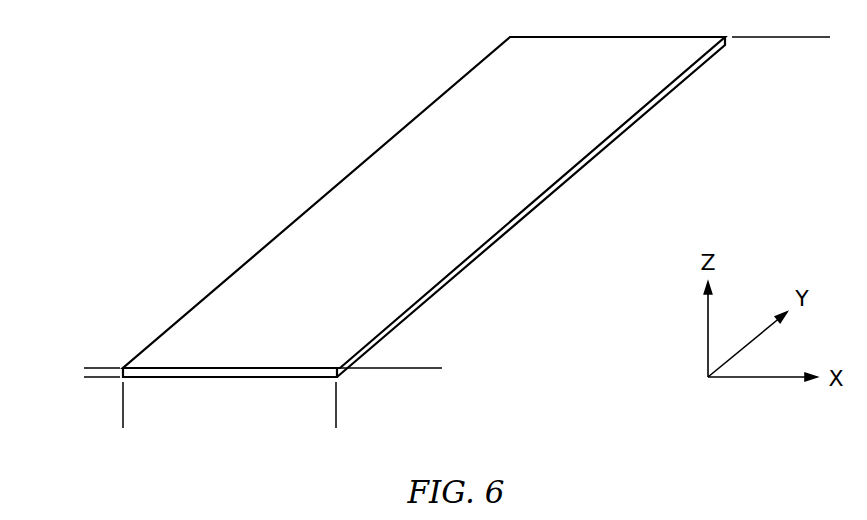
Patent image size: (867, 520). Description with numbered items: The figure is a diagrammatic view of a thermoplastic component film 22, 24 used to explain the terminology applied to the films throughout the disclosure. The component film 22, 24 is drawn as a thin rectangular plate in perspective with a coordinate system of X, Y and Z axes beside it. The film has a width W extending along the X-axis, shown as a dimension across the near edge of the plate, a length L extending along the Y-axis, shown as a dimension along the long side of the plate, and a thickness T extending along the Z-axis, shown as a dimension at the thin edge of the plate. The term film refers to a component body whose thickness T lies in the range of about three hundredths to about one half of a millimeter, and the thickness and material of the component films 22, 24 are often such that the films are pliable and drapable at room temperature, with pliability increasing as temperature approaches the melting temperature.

The component film 22 is at (424, 207).
The component film 24 is at (323, 178).
The length L is at (822, 37).
The width W is at (123, 422).
The thickness T is at (91, 425).